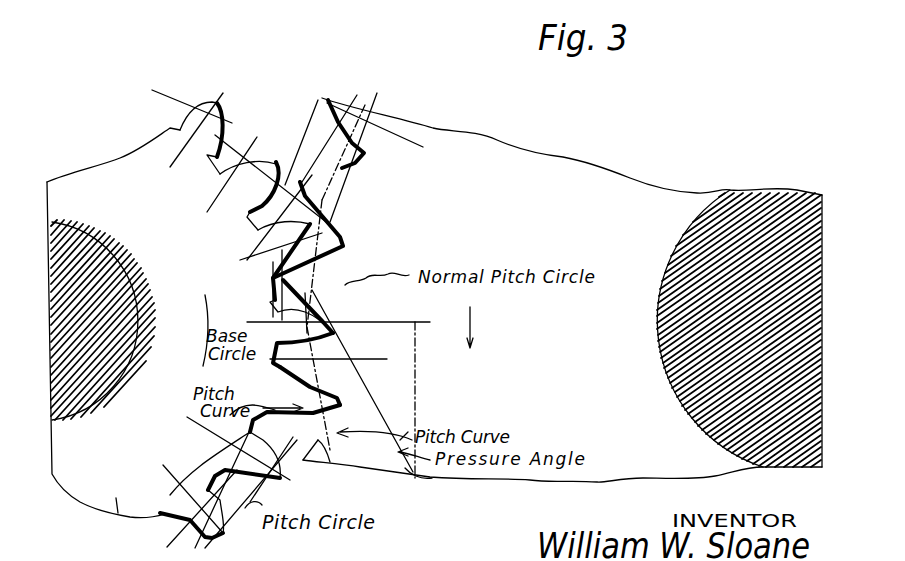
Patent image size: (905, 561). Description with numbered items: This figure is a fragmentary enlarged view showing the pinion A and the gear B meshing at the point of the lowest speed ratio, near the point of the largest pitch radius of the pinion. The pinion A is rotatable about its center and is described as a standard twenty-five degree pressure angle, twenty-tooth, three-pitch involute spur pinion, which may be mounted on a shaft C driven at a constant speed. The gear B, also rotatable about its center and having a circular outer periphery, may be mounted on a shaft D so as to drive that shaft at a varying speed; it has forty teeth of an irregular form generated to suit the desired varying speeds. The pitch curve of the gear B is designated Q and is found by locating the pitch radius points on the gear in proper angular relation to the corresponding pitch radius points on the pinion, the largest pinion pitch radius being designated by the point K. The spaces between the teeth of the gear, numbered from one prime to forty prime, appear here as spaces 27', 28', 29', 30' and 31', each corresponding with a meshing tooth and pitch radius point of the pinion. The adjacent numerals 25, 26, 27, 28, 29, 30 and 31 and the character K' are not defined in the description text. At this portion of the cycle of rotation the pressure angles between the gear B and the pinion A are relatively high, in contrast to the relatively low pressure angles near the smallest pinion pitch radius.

The gear tooth 25 is at (188, 506).
The gear tooth 26 is at (238, 466).
The gear tooth 27 is at (291, 402).
The gear tooth 28 is at (289, 332).
The gear tooth 29 is at (265, 262).
The gear tooth 30 is at (231, 187).
The gear tooth 31 is at (186, 136).
The gear tooth space 27' is at (322, 471).
The gear tooth space 28' is at (327, 386).
The gear tooth space 29' is at (336, 305).
The gear tooth space 30' is at (330, 230).
The gear tooth space 31' is at (327, 134).
The largest pitch radius point K is at (272, 169).
The line of mating tooth flank K' is at (301, 142).
The pitch curve Q is at (333, 212).
The pinion A is at (107, 515).
The gear B is at (424, 415).
The shaft C is at (134, 380).
The shaft D is at (657, 320).